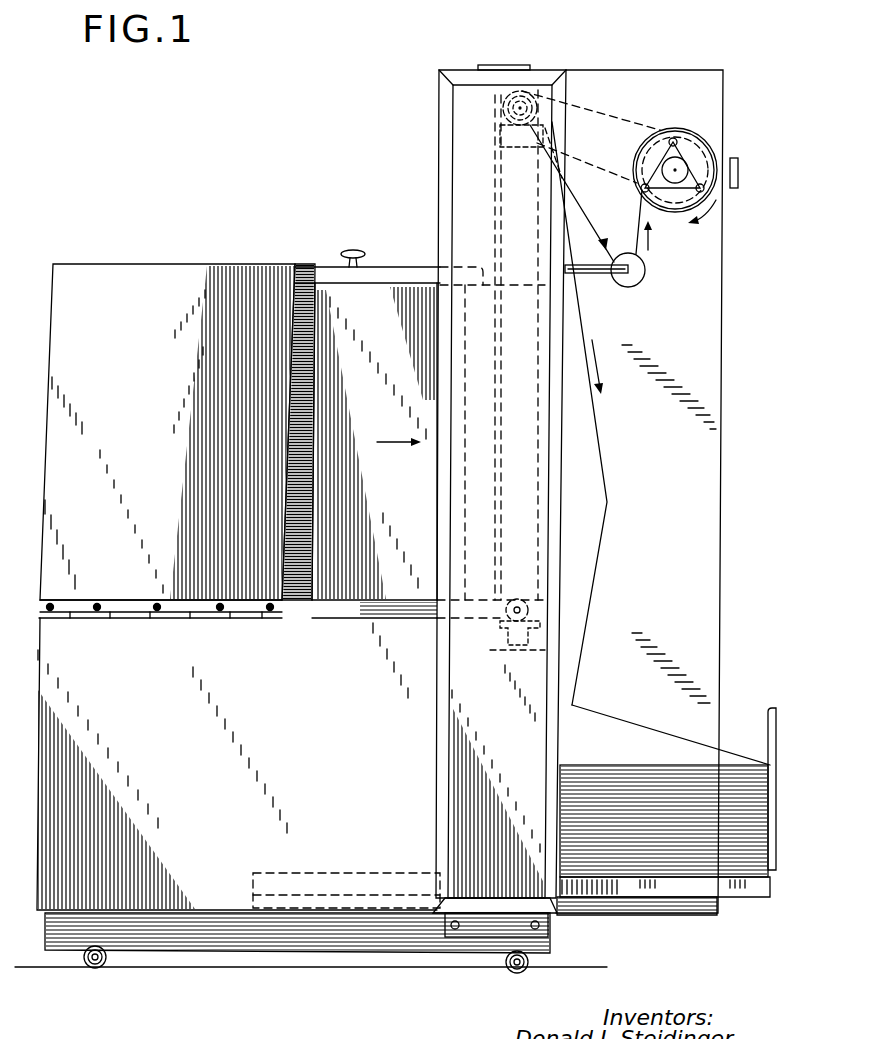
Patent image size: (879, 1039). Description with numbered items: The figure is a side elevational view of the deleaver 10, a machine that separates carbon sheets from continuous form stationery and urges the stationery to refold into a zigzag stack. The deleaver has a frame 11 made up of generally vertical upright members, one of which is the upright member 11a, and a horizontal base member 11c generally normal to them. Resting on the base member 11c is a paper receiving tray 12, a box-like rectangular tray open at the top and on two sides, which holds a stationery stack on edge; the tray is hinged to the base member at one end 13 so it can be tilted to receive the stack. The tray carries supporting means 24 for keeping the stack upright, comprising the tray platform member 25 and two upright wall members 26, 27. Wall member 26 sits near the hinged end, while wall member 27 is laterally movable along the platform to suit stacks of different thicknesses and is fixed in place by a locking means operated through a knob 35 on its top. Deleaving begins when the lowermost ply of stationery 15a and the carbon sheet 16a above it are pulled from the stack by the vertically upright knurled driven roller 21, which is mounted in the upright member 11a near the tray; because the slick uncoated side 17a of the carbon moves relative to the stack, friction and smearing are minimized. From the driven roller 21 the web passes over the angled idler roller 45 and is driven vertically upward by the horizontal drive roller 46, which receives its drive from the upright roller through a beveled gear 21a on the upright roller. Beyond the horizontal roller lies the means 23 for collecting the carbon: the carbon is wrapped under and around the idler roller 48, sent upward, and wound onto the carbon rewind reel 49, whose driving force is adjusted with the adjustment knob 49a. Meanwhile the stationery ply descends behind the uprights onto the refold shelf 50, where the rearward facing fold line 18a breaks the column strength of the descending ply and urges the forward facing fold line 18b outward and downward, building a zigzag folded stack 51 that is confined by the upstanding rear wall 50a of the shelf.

The deleaver 10 is at (360, 178).
The frame 11 is at (439, 118).
The upright member 11a is at (512, 704).
The base member 11c is at (157, 679).
The paper receiving tray 12 is at (258, 248).
The hinged end 13 is at (180, 612).
The lowermost ply of stationery 15a is at (597, 560).
The carbon sheet 16a is at (642, 218).
The slick uncoated side of the carbon 17a is at (405, 505).
The rearward facing fold line 18a is at (575, 705).
The forward facing fold line 18b is at (607, 502).
The driven roller 21 is at (507, 223).
The beveled gear 21a is at (500, 136).
The means for collecting the carbon sheets 23 is at (616, 163).
The supporting means 24 is at (222, 264).
The tray platform member 25 is at (360, 620).
The upright wall member 26 is at (118, 264).
The upright wall member 27 is at (388, 267).
The knob 35 is at (350, 246).
The angled idler roller 45 is at (502, 621).
The horizontal drive roller 46 is at (505, 102).
The idler roller 48 is at (634, 284).
The carbon rewind reel 49 is at (675, 128).
The adjustment knob 49a is at (738, 160).
The refold shelf 50 is at (660, 882).
The upstanding rear wall 50a is at (772, 710).
The zigzag folded stack of deleaved stationery 51 is at (635, 745).